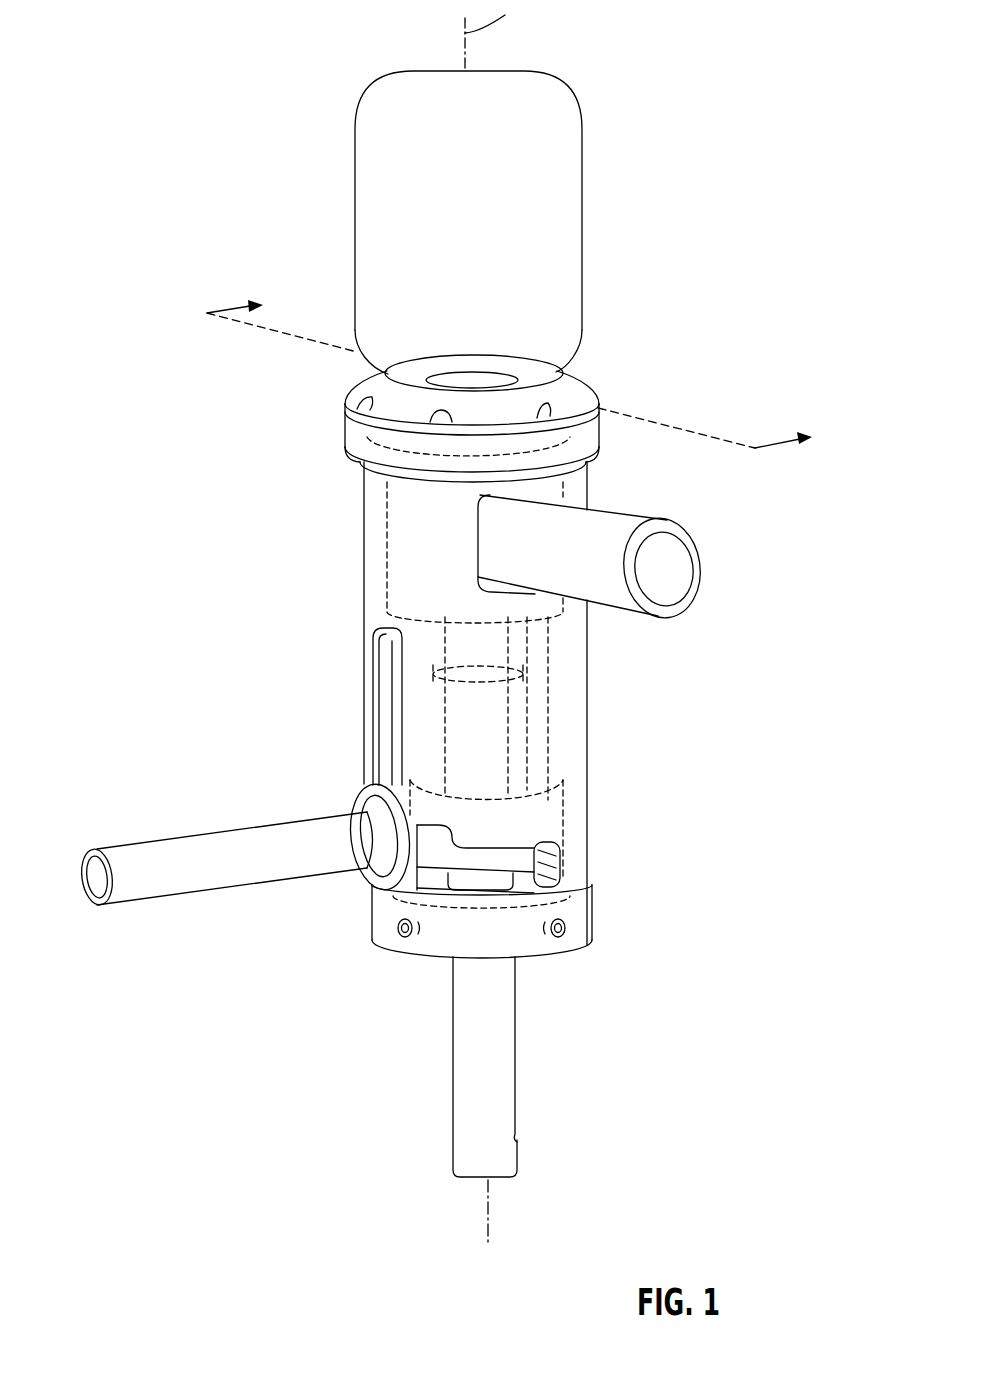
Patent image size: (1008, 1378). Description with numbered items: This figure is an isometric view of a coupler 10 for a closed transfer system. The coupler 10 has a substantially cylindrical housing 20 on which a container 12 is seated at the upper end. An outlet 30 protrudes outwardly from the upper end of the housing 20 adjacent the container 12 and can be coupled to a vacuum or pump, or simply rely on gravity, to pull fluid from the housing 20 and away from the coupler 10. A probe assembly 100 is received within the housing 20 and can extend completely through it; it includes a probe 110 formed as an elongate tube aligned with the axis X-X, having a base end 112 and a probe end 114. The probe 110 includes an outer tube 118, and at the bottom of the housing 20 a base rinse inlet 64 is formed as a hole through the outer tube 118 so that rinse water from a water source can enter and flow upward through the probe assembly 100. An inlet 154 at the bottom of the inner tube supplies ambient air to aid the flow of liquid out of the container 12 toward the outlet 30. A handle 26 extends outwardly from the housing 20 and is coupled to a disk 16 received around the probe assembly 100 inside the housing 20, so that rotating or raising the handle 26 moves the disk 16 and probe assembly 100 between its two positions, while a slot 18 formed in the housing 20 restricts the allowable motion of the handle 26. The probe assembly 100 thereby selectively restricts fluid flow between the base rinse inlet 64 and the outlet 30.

The coupler 10 is at (180, 66).
The container 12 is at (582, 190).
The housing 20 is at (364, 562).
The outlet 30 is at (668, 585).
The probe end 114 is at (543, 642).
The handle 26 is at (230, 828).
The disk 16 is at (557, 823).
The slot 18 is at (560, 866).
The probe assembly 100 is at (545, 965).
The probe 110 is at (517, 1028).
The outer tube 118 is at (462, 1055).
The base end 112 is at (545, 1083).
The base rinse inlet 64 is at (515, 1137).
The inlet 154 is at (502, 1178).